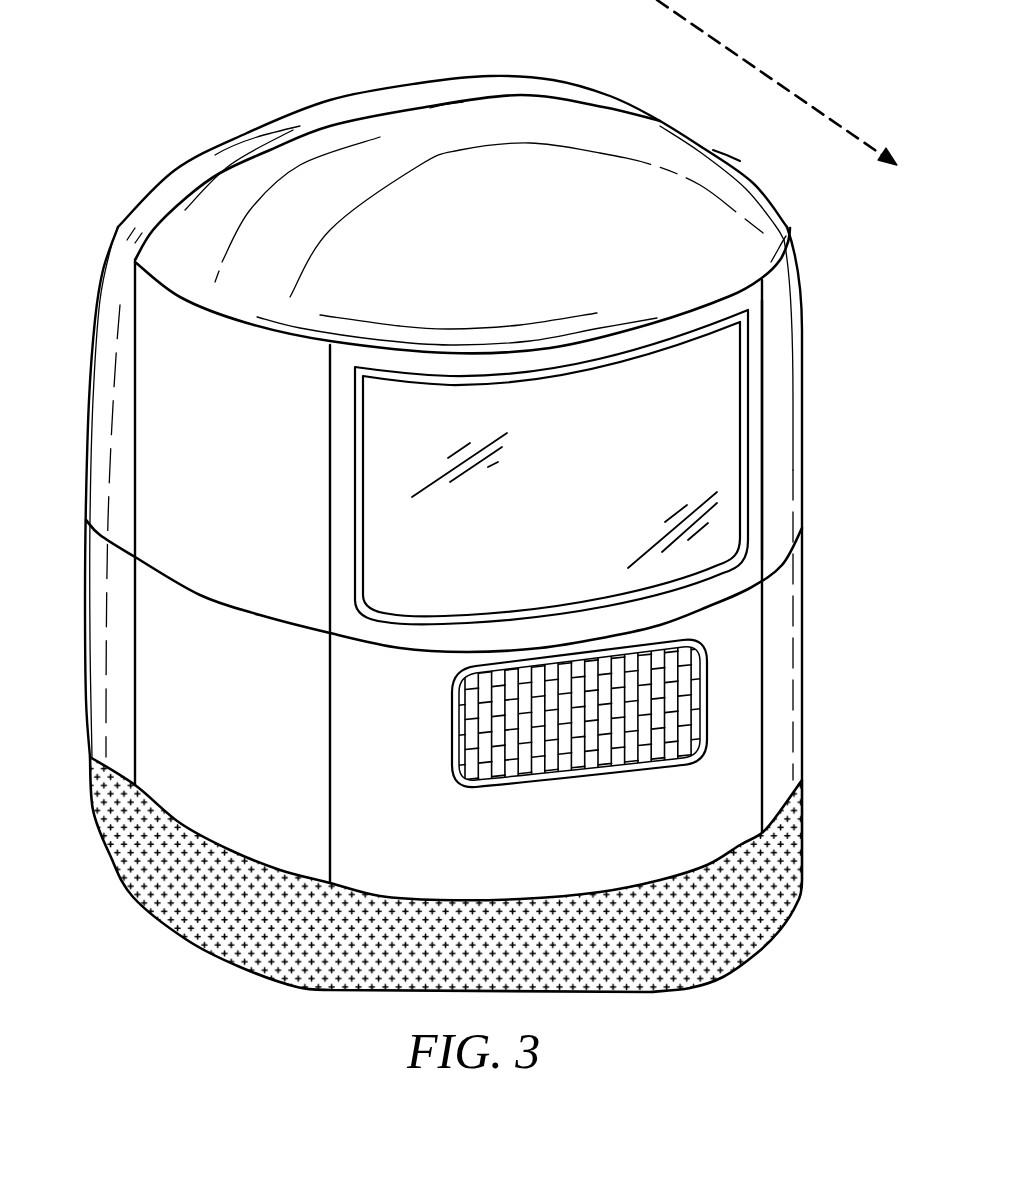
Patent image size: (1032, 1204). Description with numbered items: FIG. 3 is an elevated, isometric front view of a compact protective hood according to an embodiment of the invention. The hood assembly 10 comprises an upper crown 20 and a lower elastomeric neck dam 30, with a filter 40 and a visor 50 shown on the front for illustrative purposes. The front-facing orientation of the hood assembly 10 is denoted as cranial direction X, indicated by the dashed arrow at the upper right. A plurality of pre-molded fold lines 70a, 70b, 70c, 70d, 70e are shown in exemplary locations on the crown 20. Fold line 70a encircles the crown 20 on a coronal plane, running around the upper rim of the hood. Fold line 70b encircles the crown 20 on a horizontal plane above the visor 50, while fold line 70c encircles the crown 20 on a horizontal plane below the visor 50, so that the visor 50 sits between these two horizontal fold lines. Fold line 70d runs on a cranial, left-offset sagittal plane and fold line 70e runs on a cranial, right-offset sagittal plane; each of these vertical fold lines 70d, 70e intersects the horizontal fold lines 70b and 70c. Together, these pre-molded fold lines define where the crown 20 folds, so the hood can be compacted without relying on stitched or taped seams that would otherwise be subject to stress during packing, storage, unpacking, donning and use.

The hood assembly 10 is at (198, 101).
The upper crown 20 is at (378, 90).
The lower elastomeric neck dam 30 is at (163, 877).
The filter 40 is at (474, 740).
The visor 50 is at (596, 490).
The fold line 70a is at (597, 107).
The fold line 70b is at (779, 262).
The fold line 70c is at (782, 567).
The fold line 70d is at (762, 417).
The fold line 70e is at (330, 477).
The cranial direction X is at (768, 70).